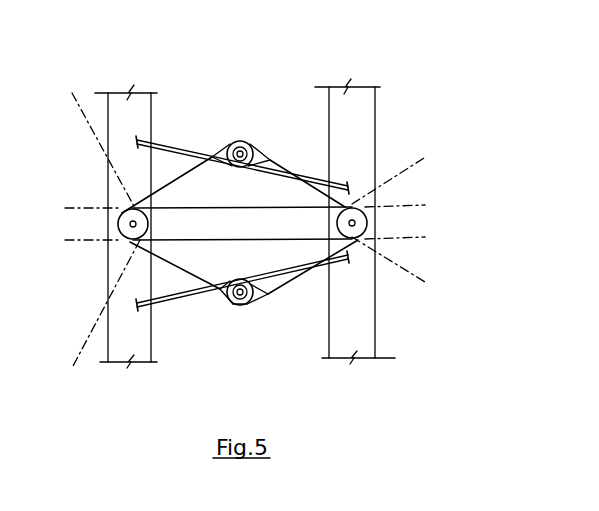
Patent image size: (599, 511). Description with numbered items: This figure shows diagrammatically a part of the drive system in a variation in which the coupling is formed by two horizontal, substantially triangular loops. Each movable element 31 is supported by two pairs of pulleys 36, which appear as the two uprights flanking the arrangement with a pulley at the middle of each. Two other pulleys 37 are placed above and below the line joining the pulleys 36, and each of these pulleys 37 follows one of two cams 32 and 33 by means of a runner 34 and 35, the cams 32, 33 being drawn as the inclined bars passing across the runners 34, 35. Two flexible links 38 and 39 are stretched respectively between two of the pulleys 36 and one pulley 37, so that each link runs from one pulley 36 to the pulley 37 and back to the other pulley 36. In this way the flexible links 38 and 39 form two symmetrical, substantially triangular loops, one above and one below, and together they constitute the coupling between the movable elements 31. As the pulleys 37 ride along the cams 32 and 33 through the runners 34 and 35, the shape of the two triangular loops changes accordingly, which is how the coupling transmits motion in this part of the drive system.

The movable element 31 is at (130, 113).
The cam 32 is at (172, 147).
The cam 33 is at (177, 300).
The runner 34 is at (240, 152).
The runner 35 is at (235, 307).
The pulley 36 is at (356, 215).
The pulley 37 is at (247, 140).
The flexible link 38 is at (275, 153).
The flexible link 39 is at (267, 297).